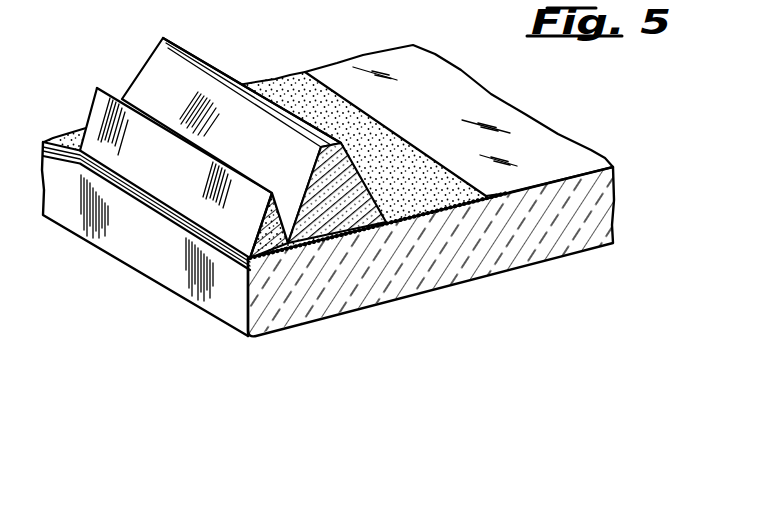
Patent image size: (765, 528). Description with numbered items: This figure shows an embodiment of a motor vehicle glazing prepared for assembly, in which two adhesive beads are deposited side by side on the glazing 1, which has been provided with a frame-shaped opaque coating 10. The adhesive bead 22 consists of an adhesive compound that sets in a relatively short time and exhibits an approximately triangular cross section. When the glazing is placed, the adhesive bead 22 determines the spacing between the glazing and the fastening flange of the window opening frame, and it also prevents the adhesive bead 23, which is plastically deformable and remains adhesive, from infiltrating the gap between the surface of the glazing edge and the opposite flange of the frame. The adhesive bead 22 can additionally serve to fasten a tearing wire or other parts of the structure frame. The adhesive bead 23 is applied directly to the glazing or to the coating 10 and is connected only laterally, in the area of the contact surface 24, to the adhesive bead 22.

The glazing 1 is at (536, 245).
The frame-shaped opaque coating 10 is at (361, 113).
The adhesive bead 22 is at (97, 118).
The adhesive bead 23 is at (150, 64).
The contact surface 24 is at (283, 243).